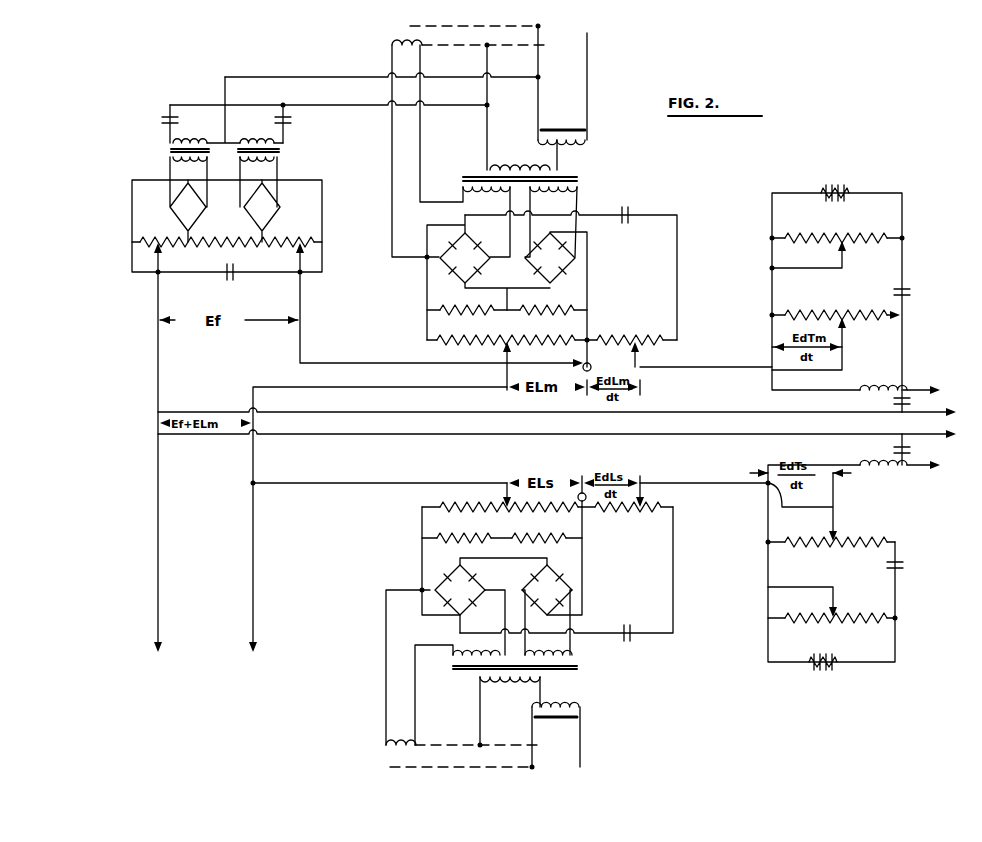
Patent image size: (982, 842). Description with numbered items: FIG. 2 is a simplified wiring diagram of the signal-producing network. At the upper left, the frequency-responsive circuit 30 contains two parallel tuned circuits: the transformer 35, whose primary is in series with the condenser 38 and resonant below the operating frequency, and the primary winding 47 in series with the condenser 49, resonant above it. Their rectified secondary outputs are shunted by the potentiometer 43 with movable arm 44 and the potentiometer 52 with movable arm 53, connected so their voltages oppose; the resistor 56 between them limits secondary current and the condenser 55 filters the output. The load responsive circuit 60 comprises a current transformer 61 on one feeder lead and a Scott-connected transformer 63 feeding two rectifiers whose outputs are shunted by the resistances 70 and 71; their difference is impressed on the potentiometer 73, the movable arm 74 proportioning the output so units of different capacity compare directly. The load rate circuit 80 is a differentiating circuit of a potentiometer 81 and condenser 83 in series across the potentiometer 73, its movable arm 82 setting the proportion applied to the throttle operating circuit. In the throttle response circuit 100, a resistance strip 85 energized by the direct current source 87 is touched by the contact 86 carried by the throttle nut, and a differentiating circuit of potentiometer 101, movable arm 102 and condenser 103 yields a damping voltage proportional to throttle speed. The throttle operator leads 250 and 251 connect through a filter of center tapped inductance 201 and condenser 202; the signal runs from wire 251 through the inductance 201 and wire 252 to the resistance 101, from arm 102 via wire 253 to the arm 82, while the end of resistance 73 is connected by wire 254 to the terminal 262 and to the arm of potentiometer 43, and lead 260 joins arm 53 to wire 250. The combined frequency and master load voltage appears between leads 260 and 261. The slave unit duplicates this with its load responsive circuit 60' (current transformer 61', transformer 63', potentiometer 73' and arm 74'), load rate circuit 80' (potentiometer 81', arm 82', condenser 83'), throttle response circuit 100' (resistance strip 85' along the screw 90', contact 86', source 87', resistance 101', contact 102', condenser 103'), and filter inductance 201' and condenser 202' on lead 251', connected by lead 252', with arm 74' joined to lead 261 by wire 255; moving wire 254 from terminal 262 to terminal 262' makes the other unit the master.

The frequency-responsive circuit 30 is at (155, 170).
The transformer 35 is at (279, 152).
The condenser 38 is at (291, 118).
The variable potentiometer 43 is at (300, 242).
The movable arm 44 is at (322, 245).
The primary winding 47 is at (174, 152).
The condenser 49 is at (180, 118).
The potentiometer 52 is at (155, 236).
The movable arm 53 is at (163, 250).
The condenser 55 is at (235, 269).
The resistor 56 is at (201, 199).
The load responsive circuit 60 is at (491, 293).
The current transformer 61 is at (455, 40).
The Scott-connected transformer 63 is at (532, 174).
The resistance 70 is at (463, 305).
The resistance 71 is at (541, 308).
The potentiometer 73 is at (508, 331).
The movable arm 74 is at (523, 366).
The load rate circuit 80 is at (633, 305).
The potentiometer 81 is at (632, 329).
The movable arm 82 is at (667, 354).
The condenser 83 is at (638, 207).
The resistance strip 85 is at (837, 229).
The contact 86 is at (824, 260).
The source of direct current 87 is at (846, 184).
The throttle response circuit 100 is at (859, 291).
The potentiometer 101 is at (835, 303).
The movable arm 102 is at (829, 344).
The condenser 103 is at (920, 301).
The center tapped inductance 201 is at (883, 375).
The condenser 202 is at (869, 402).
The lead 250 is at (488, 414).
The lead 251 is at (927, 377).
The wire 252 is at (752, 341).
The wire 253 is at (716, 368).
The wire 254 is at (374, 363).
The wire 255 is at (398, 482).
The lead 260 is at (159, 378).
The lead 261 is at (402, 389).
The terminal 262 is at (605, 358).
The load responsive circuit 60' is at (480, 574).
The current transformer 61' is at (442, 746).
The Scott-connected transformer 63' is at (532, 675).
The potentiometer 73' is at (497, 497).
The movable arm 74' is at (486, 495).
The load rate circuit 80' is at (647, 663).
The potentiometer 81' is at (627, 519).
The movable arm 82' is at (667, 491).
The condenser 83' is at (615, 623).
The resistance strip 85' is at (833, 627).
The contact 86' is at (802, 602).
The source of direct current 87' is at (849, 670).
The screw 90' is at (862, 563).
The throttle response circuit 100' is at (742, 674).
The resistance 101' is at (831, 550).
The movable contact 102' is at (827, 507).
The condenser 103' is at (919, 545).
The filter inductance 201' is at (890, 478).
The condenser 202' is at (922, 449).
The lead 251' is at (933, 478).
The lead 252' is at (816, 452).
The terminal 262' is at (557, 496).